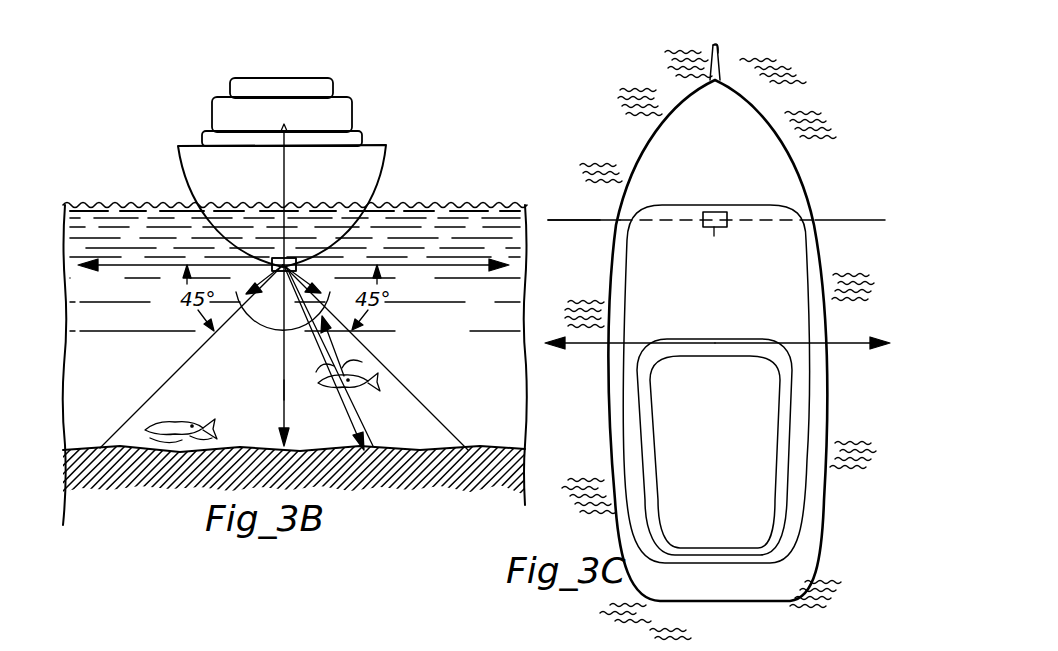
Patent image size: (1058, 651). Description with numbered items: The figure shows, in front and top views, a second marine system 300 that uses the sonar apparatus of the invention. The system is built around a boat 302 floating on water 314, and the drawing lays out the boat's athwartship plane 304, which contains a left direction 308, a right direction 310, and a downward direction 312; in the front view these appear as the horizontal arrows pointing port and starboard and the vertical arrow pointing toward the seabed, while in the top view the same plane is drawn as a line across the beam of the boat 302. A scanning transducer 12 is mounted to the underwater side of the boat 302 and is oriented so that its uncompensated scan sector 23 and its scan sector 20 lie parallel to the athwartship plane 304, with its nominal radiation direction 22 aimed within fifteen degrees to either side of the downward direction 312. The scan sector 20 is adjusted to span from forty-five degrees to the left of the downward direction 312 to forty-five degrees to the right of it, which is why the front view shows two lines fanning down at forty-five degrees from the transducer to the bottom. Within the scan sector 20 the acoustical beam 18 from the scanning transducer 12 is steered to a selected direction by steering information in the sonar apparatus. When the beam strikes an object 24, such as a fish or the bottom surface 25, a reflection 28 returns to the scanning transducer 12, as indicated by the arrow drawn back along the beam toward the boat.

In FIG. 3B, the scanning transducer 12 is at (278, 257).
In FIG. 3C, the scanning transducer 12 is at (717, 236).
In FIG. 3B, the acoustical beam 18 is at (354, 420).
In FIG. 3B, the scan sector 20 is at (297, 261).
In FIG. 3C, the scan sector 20 is at (885, 220).
In FIG. 3B, the nominal radiation direction 22 is at (283, 364).
In FIG. 3B, the uncompensated scan sector 23 is at (240, 300).
In FIG. 3C, the uncompensated scan sector 23 is at (548, 220).
In FIG. 3B, the object 24 is at (234, 416).
In FIG. 3B, the bottom surface 25 is at (298, 454).
In FIG. 3B, the reflection 28 is at (342, 382).
In FIG. 3B, the second marine system 300 is at (183, 488).
In FIG. 3C, the second marine system 300 is at (614, 150).
In FIG. 3B, the boat 302 is at (367, 153).
In FIG. 3C, the boat 302 is at (738, 472).
In FIG. 3C, the athwartship plane 304 is at (703, 348).
In FIG. 3B, the left direction 308 is at (464, 266).
In FIG. 3C, the left direction 308 is at (573, 345).
In FIG. 3B, the right direction 310 is at (113, 265).
In FIG. 3C, the right direction 310 is at (854, 345).
In FIG. 3B, the downward direction 312 is at (283, 392).
In FIG. 3B, the water 314 is at (140, 372).
In FIG. 3C, the water 314 is at (588, 434).